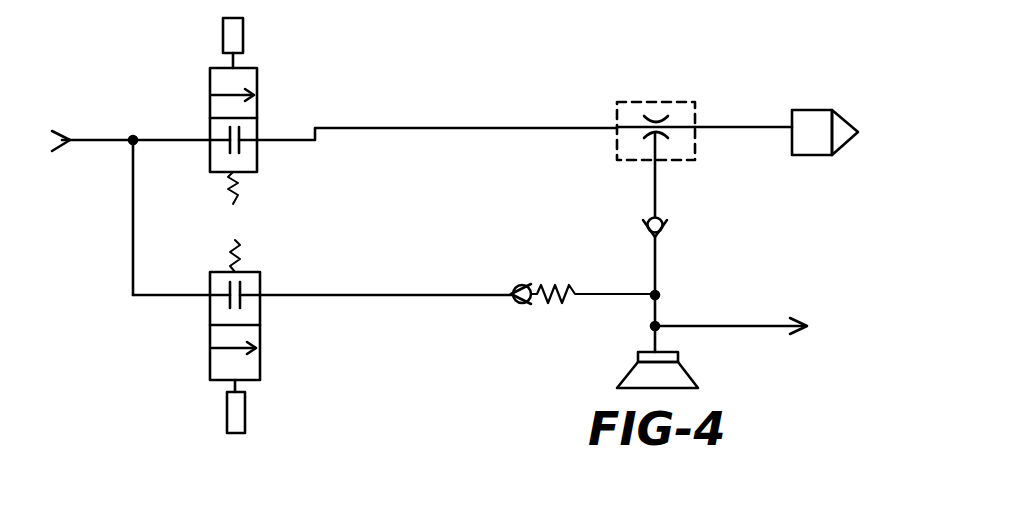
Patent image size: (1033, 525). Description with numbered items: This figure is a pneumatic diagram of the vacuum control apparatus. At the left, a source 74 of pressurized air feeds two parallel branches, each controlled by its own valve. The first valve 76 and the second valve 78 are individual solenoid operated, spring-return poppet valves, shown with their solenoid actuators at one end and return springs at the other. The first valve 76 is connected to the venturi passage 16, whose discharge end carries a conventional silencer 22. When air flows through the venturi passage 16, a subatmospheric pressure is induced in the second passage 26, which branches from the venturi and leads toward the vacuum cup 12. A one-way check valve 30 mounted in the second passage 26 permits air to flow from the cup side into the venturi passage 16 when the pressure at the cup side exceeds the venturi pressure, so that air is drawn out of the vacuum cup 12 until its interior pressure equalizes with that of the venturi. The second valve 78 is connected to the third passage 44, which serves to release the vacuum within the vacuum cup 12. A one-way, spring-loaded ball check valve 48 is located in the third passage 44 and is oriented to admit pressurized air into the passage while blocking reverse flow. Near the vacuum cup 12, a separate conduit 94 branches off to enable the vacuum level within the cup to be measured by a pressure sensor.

The vacuum cup 12 is at (628, 372).
The venturi passage 16 is at (617, 103).
The silencer 22 is at (798, 112).
The second passage 26 is at (655, 182).
The one-way check valve 30 is at (668, 223).
The third passage 44 is at (380, 300).
The spring-loaded ball check valve 48 is at (542, 290).
The source of pressurized air 74 is at (62, 138).
The first valve 76 is at (208, 88).
The second valve 78 is at (208, 348).
The conduit 94 is at (793, 320).